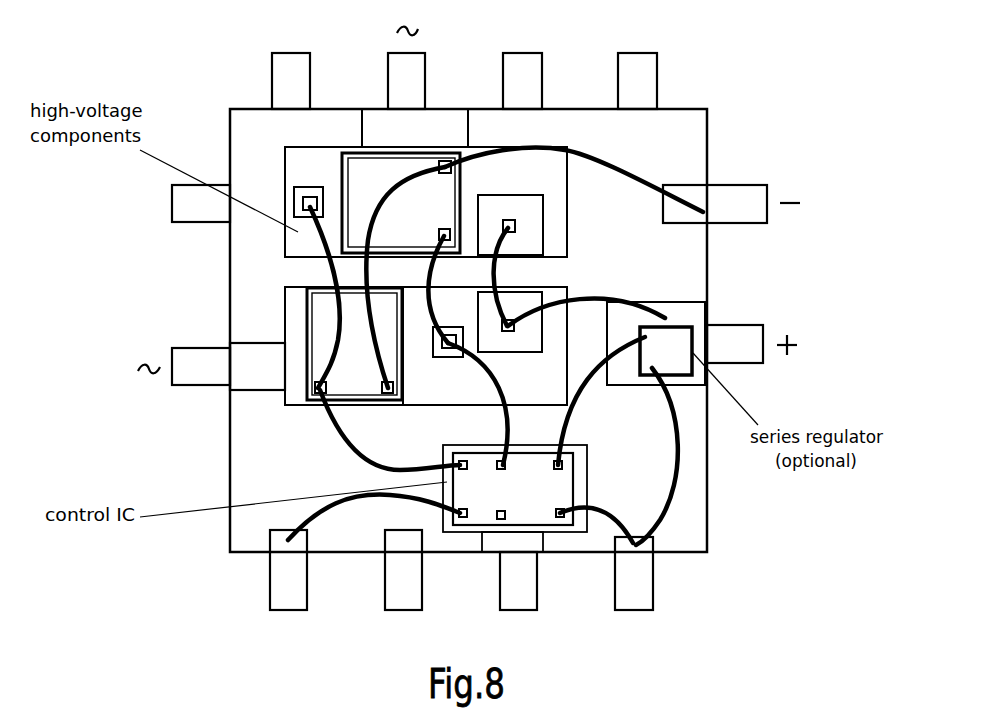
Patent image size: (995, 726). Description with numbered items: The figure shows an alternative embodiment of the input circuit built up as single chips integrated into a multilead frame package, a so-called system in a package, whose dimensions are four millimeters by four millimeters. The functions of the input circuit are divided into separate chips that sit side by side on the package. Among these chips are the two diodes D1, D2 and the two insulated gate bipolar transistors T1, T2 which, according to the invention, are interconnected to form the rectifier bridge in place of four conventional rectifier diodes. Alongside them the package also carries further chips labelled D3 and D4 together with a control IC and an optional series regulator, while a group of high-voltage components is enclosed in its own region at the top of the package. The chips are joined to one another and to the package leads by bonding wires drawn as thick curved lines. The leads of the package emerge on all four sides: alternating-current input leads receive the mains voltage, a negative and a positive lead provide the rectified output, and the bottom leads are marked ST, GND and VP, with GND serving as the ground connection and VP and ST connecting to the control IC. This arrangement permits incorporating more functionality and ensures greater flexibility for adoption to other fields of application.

The diode D3 is at (319, 168).
The insulated gate bipolar transistor T1 is at (401, 186).
The diode D1 is at (510, 187).
The insulated gate bipolar transistor T2 is at (354, 361).
The diode D4 is at (448, 381).
The diode D2 is at (510, 363).
The ST pin ST is at (288, 591).
The ground pin GND is at (403, 591).
The VP pin VP is at (634, 596).